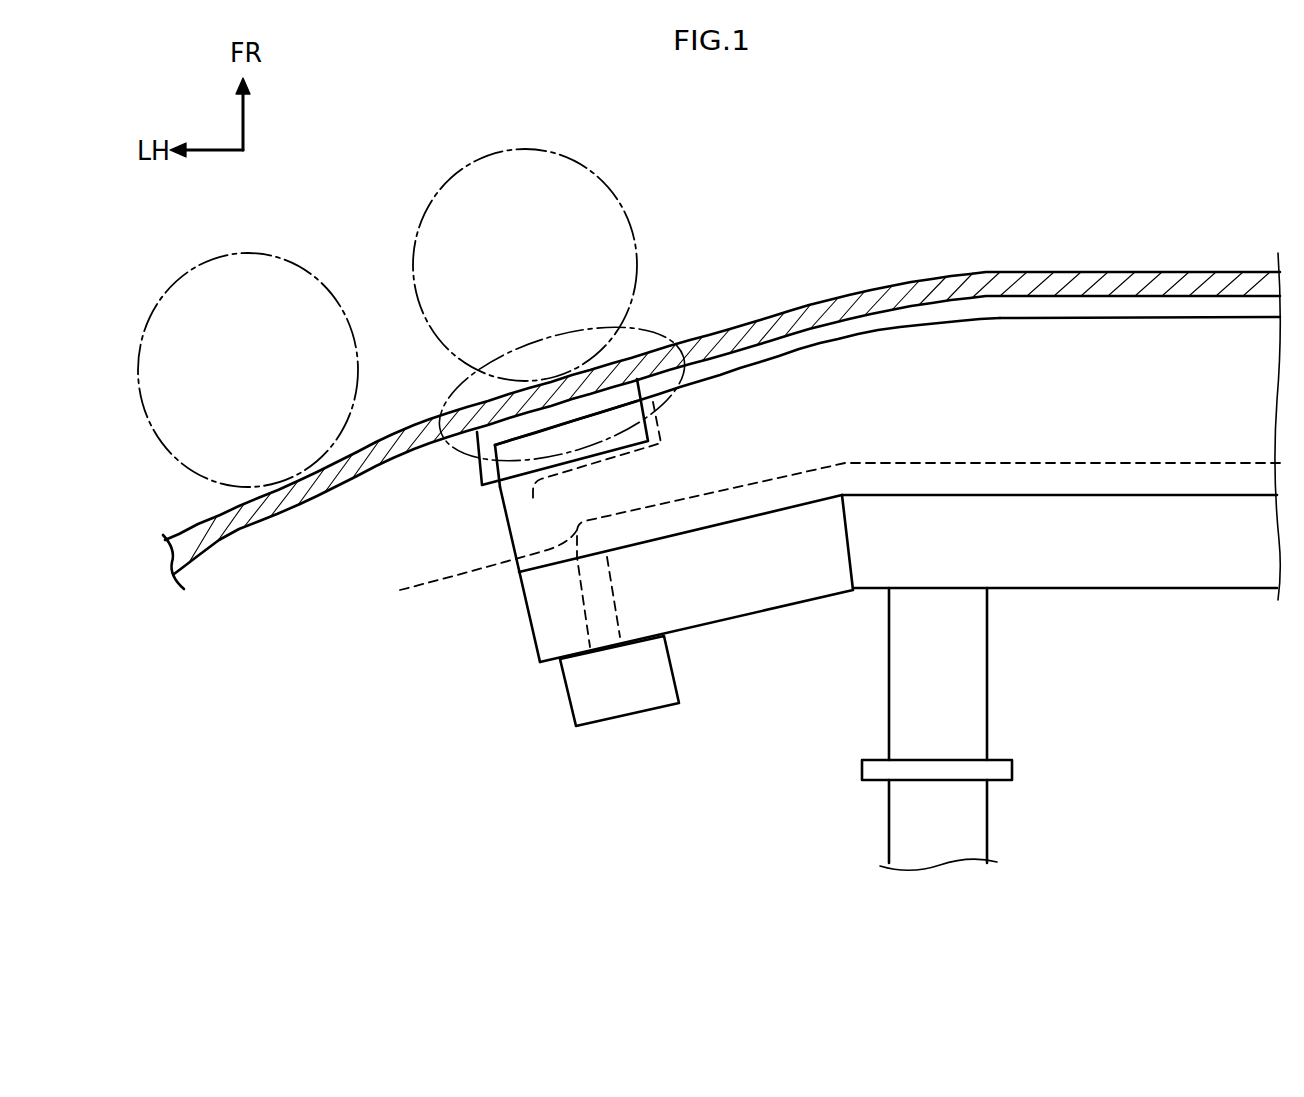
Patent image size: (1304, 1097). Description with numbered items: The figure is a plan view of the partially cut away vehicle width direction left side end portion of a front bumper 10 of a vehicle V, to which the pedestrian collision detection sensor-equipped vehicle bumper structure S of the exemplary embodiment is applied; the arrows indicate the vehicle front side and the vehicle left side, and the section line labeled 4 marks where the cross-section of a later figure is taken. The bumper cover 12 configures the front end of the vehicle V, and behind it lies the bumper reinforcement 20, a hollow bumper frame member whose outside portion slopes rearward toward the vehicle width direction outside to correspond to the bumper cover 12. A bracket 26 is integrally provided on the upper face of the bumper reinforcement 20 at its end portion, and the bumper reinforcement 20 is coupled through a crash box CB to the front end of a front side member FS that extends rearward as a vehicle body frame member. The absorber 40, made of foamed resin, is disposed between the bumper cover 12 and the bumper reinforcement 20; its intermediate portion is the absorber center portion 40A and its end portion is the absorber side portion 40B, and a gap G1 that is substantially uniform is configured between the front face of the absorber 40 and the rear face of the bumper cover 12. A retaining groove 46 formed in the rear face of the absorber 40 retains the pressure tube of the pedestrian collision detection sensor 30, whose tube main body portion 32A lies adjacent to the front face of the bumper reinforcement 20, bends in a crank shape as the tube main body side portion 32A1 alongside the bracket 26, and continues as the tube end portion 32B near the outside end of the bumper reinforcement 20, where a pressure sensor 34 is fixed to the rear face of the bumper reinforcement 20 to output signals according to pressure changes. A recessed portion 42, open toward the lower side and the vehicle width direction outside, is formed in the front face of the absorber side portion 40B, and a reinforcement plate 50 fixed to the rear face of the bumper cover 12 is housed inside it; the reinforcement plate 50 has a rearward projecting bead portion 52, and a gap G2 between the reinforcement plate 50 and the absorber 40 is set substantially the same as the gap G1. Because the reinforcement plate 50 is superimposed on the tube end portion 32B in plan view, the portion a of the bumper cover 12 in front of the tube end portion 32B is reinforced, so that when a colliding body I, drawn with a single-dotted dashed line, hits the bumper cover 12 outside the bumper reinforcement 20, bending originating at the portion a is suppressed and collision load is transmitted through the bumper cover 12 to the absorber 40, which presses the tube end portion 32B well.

The front bumper 10 is at (1045, 200).
The bumper cover 12 is at (1142, 275).
The bumper reinforcement 20 is at (1120, 592).
The bracket 26 is at (727, 605).
The pedestrian collision detection sensor 30 is at (642, 636).
The tube main body portion 32A is at (1200, 480).
The tube main body side portion 32A1 is at (804, 490).
The tube end portion 32B is at (520, 578).
The pressure sensor 34 is at (652, 710).
The absorber 40 is at (945, 275).
The absorber center portion 40A is at (1203, 340).
The absorber side portion 40B is at (752, 383).
The recessed portion 42 is at (612, 460).
The retaining groove 46 is at (955, 466).
The reinforcement plate 50 is at (484, 473).
The bead portion 52 is at (495, 482).
The portion a is at (455, 393).
The crash box CB is at (987, 692).
The front side member FS is at (987, 817).
The gap G1 is at (867, 320).
The gap G2 is at (540, 480).
The colliding body I is at (296, 258).
The pedestrian collision detection sensor-equipped vehicle bumper structure S is at (688, 222).
The vehicle V is at (1105, 128).
The section line for FIG. 4 is at (499, 82).